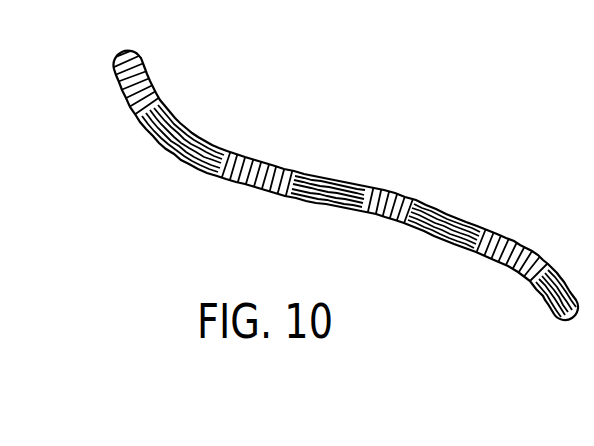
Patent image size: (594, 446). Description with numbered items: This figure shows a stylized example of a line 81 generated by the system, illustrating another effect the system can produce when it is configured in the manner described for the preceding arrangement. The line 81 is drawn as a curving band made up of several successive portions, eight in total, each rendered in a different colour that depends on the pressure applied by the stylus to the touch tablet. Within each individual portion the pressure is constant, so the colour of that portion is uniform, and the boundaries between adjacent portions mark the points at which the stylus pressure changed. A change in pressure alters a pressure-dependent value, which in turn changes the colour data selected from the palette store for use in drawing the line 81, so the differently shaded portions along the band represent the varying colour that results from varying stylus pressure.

The line 81 is at (140, 146).